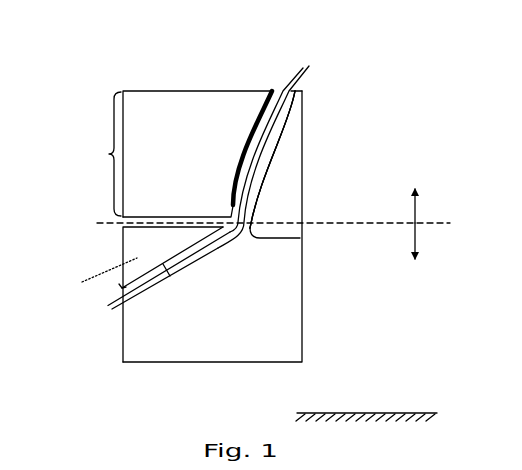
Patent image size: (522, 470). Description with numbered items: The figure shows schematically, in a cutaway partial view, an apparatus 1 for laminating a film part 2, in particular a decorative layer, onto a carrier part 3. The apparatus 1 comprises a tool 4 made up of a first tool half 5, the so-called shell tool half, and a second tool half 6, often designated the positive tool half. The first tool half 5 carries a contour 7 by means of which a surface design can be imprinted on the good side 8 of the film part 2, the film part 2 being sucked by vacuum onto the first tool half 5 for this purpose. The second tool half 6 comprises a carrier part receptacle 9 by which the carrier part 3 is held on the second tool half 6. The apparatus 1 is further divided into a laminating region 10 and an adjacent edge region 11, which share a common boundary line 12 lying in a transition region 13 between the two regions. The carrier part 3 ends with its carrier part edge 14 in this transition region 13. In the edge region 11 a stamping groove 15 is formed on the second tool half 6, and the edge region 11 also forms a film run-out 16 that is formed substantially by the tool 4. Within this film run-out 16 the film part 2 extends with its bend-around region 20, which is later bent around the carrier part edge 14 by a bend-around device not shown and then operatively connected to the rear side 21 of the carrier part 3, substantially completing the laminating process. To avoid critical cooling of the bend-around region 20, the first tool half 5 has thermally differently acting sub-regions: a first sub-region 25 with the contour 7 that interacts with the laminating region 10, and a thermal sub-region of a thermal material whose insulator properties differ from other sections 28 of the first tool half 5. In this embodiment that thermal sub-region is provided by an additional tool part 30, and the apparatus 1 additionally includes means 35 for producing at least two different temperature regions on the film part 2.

The apparatus 1 is at (428, 412).
The film part 2 is at (311, 68).
The carrier part 3 is at (295, 91).
The tool 4 is at (193, 67).
The first tool half 5 is at (160, 98).
The second tool half 6 is at (294, 300).
The contour 7 is at (272, 95).
The good side 8 is at (292, 77).
The carrier part receptacle 9 is at (289, 112).
The laminating region 10 is at (420, 191).
The edge region 11 is at (418, 250).
The boundary line 12 is at (451, 223).
The transition region 13 is at (88, 222).
The carrier part edge 14 is at (300, 238).
The stamping groove 15 is at (222, 252).
The film run-out 16 is at (74, 258).
The bend-around region 20 is at (112, 305).
The rear side 21 is at (260, 177).
The first sub-region 25 is at (101, 154).
The other sections 28 is at (82, 132).
The additional tool part 30 is at (97, 277).
The means for producing at least two different temperature regions 35 is at (78, 240).